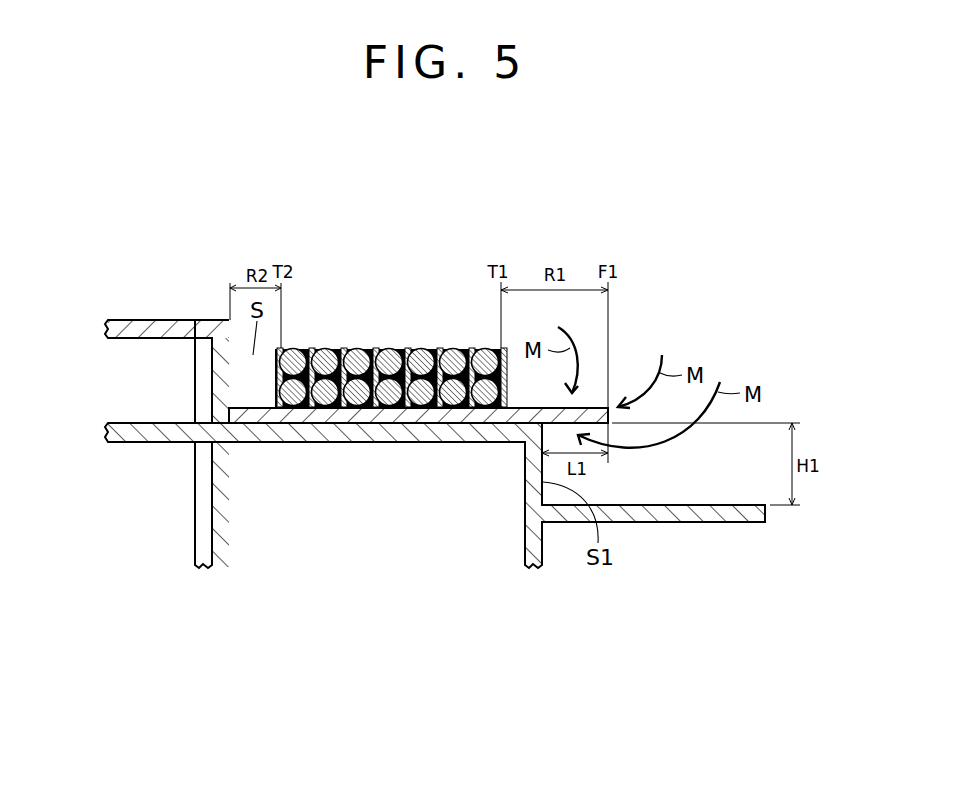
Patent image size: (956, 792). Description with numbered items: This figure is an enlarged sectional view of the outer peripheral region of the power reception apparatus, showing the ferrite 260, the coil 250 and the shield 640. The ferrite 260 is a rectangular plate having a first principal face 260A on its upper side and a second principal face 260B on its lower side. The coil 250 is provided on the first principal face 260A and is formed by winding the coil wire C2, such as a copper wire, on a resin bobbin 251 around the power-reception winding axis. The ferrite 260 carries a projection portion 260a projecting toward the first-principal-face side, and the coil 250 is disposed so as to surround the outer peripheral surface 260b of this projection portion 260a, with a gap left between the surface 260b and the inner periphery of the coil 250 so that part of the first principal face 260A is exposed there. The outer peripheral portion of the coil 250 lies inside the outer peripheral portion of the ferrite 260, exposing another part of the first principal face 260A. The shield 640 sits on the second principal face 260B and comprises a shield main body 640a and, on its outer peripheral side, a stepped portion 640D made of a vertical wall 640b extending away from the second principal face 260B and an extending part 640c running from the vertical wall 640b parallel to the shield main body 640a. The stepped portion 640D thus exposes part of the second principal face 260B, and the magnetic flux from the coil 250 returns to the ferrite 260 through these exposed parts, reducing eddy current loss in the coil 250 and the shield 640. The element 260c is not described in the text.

The ferrite 260 is at (371, 414).
The projection portion 260a is at (123, 319).
The outer peripheral surface 260b is at (220, 387).
The horizontal plate portion of frame member 260c is at (245, 407).
The first principal face 260A is at (586, 407).
The second principal face 260B is at (256, 425).
The shield 640 is at (435, 562).
The shield main body 640a is at (420, 442).
The vertical wall 640b is at (524, 478).
The extending part 640c is at (653, 567).
The stepped portion 640D is at (621, 542).
The coil 250 is at (421, 360).
The resin bobbin 251 is at (375, 348).
The coil wire C2 is at (391, 340).